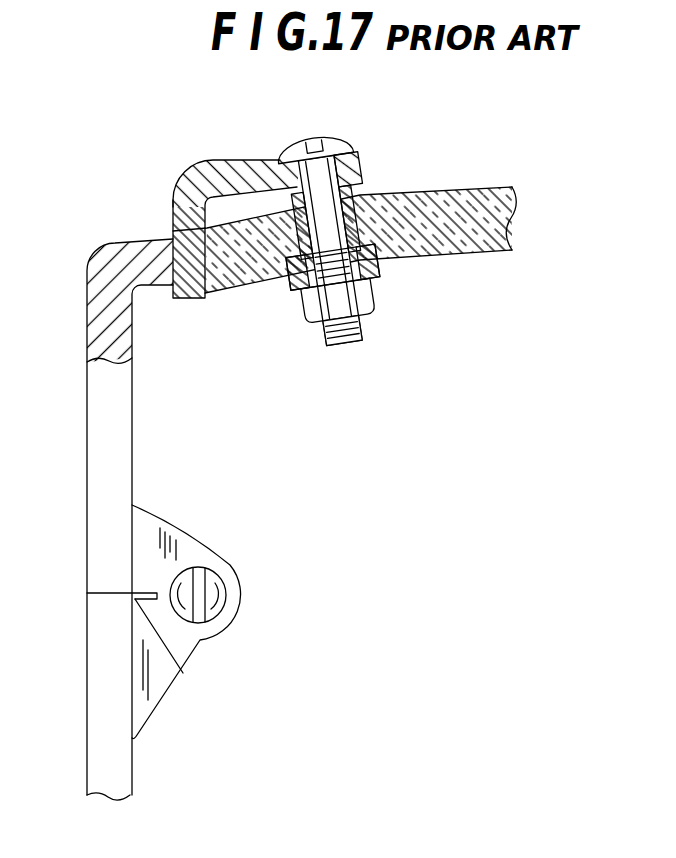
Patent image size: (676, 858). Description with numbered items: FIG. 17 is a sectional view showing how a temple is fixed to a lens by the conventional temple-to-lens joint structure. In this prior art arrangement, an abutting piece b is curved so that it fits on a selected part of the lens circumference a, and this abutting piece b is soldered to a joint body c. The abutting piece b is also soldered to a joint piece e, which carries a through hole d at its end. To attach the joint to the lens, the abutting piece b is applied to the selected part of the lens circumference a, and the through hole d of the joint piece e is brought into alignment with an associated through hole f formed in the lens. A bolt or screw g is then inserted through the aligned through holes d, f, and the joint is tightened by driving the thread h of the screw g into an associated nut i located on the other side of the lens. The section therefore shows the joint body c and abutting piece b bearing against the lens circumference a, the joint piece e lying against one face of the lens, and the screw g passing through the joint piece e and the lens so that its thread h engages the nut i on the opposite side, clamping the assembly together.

The lens circumference a is at (204, 298).
The abutting piece b is at (175, 298).
The joint body c is at (134, 252).
The through hole d is at (320, 140).
The joint piece e is at (247, 173).
The through hole of the lens f is at (363, 193).
The screw g is at (294, 158).
The thread h is at (357, 343).
The nut i is at (378, 288).